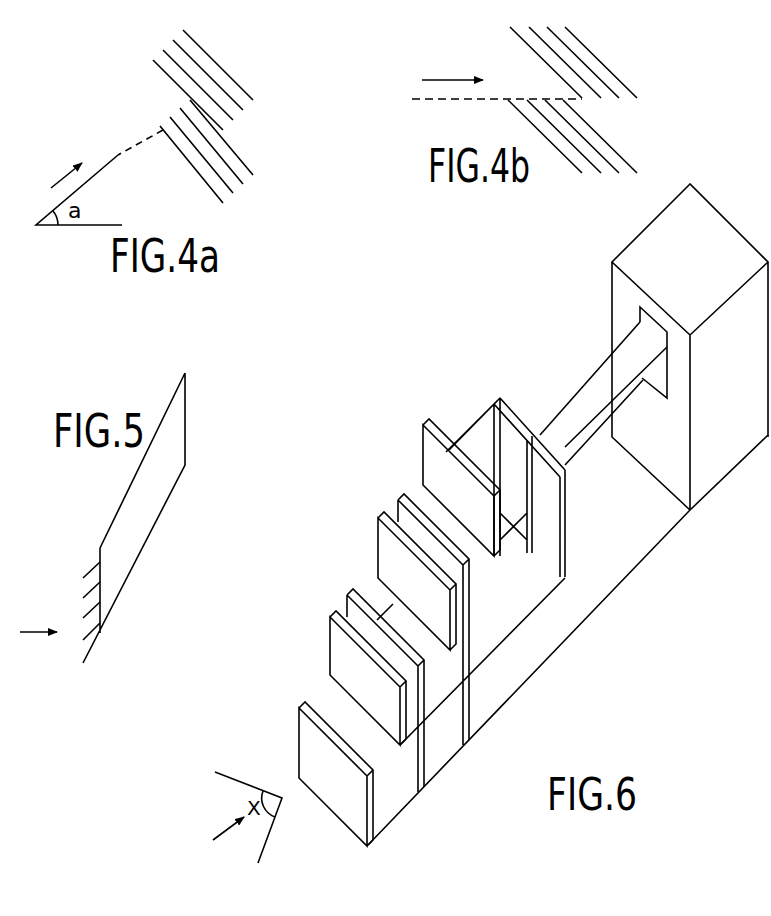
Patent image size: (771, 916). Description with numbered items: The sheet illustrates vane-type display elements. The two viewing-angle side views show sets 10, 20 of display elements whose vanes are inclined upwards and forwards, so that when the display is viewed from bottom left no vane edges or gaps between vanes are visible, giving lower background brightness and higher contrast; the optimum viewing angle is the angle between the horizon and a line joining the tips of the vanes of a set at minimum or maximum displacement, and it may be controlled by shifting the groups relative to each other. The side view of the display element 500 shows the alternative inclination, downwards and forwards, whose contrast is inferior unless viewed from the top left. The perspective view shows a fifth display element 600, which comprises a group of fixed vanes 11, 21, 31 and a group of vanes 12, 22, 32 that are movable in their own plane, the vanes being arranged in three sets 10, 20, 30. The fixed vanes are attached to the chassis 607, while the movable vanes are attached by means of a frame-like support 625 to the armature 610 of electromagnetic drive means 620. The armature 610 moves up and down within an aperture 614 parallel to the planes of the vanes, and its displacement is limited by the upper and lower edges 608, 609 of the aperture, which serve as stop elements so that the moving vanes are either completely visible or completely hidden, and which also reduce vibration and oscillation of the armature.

In FIG. 4A, the set of display elements 10 is at (250, 193).
In FIG. 4B, the set of display elements 10 is at (624, 135).
In FIG. 6, the set of display elements 10 is at (321, 728).
In FIG. 6, the fixed vane 11 is at (305, 745).
In FIG. 6, the movable vane 12 is at (343, 640).
In FIG. 4A, the set of display elements 20 is at (250, 118).
In FIG. 4B, the set of display elements 20 is at (624, 50).
In FIG. 6, the set of display elements 20 is at (369, 621).
In FIG. 6, the fixed vane 21 is at (352, 598).
In FIG. 6, the movable vane 22 is at (383, 552).
In FIG. 6, the set of display elements 30 is at (412, 524).
In FIG. 6, the fixed vane 31 is at (398, 507).
In FIG. 6, the movable vane 32 is at (428, 455).
In FIG. 5, the display element 500 is at (137, 567).
In FIG. 6, the fifth display element 600 is at (502, 515).
In FIG. 6, the chassis 607 is at (623, 580).
In FIG. 6, the upper edge of aperture 608 is at (641, 307).
In FIG. 6, the lower edge of aperture 609 is at (645, 392).
In FIG. 6, the armature 610 is at (570, 397).
In FIG. 6, the aperture 614 is at (660, 370).
In FIG. 6, the electromagnetic drive means 620 is at (723, 474).
In FIG. 6, the frame-like support 625 is at (565, 560).